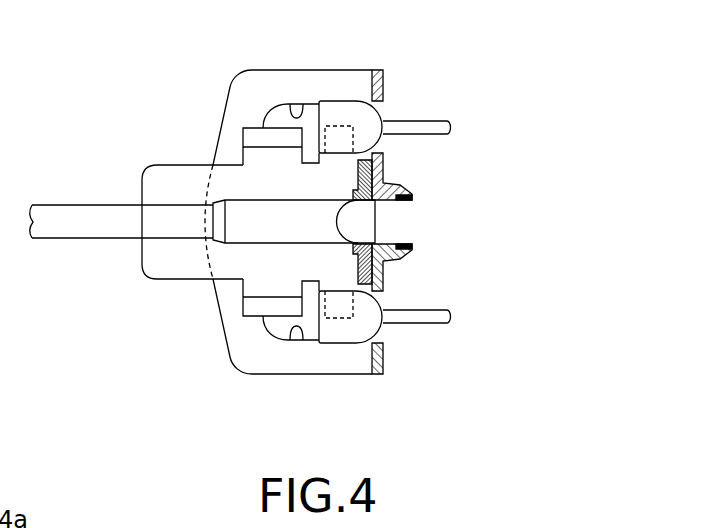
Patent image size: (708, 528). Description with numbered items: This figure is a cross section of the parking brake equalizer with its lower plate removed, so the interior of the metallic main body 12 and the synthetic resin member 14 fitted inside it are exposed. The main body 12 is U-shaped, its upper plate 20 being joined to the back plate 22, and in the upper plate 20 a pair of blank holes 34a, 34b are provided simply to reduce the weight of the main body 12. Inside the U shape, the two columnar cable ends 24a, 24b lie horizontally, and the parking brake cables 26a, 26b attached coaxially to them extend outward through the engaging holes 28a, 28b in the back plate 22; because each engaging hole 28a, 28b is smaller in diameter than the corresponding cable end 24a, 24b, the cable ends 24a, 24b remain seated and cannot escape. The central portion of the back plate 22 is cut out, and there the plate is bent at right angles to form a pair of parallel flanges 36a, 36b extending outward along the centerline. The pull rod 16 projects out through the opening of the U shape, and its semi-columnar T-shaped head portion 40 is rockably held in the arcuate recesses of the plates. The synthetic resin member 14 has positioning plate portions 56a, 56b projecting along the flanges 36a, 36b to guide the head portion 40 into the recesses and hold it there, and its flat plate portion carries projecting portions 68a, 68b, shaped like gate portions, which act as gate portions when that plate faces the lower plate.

The main body 12 is at (387, 394).
The synthetic resin member 14 is at (134, 288).
The pull rod 16 is at (62, 220).
The upper plate 20 is at (251, 78).
The back plate 22 is at (385, 76).
The cable end 24a is at (338, 108).
The cable end 24b is at (338, 336).
The parking brake cable 26a is at (441, 125).
The parking brake cable 26b is at (438, 320).
The engaging hole 28a is at (385, 114).
The engaging hole 28b is at (385, 333).
The blank hole 34a is at (285, 100).
The blank hole 34b is at (266, 332).
The flange 36a is at (400, 178).
The flange 36b is at (394, 268).
The head portion 40 is at (365, 223).
The positioning plate portion 56a is at (410, 193).
The positioning plate portion 56b is at (410, 252).
The projecting portion 68a is at (255, 133).
The projecting portion 68b is at (256, 310).